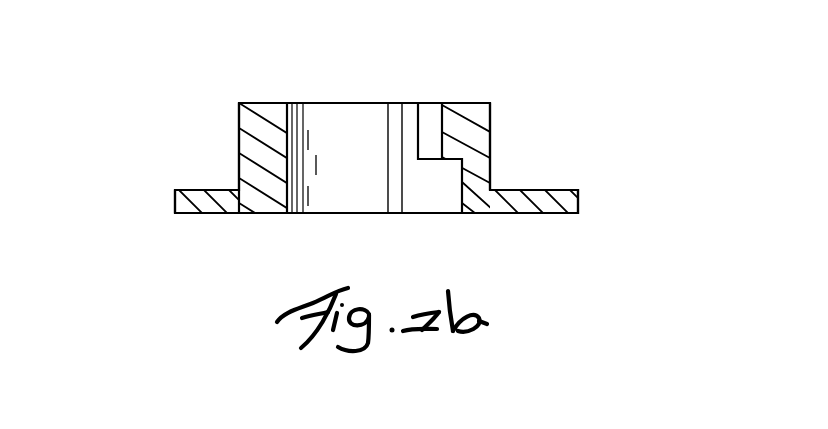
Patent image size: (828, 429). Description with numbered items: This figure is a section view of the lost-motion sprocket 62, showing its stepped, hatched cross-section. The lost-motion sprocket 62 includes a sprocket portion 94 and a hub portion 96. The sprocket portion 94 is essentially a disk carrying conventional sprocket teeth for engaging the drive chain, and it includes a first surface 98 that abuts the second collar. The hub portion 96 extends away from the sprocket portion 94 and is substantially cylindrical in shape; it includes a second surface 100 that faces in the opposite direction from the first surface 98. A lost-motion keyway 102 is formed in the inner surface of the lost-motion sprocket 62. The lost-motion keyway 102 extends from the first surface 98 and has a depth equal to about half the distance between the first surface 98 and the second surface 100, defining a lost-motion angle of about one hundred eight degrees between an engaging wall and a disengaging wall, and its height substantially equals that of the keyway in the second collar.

The lost-motion sprocket 62 is at (563, 152).
The sprocket portion 94 is at (568, 213).
The hub portion 96 is at (238, 112).
The first surface 98 is at (228, 221).
The second surface 100 is at (456, 100).
The lost-motion keyway 102 is at (440, 187).